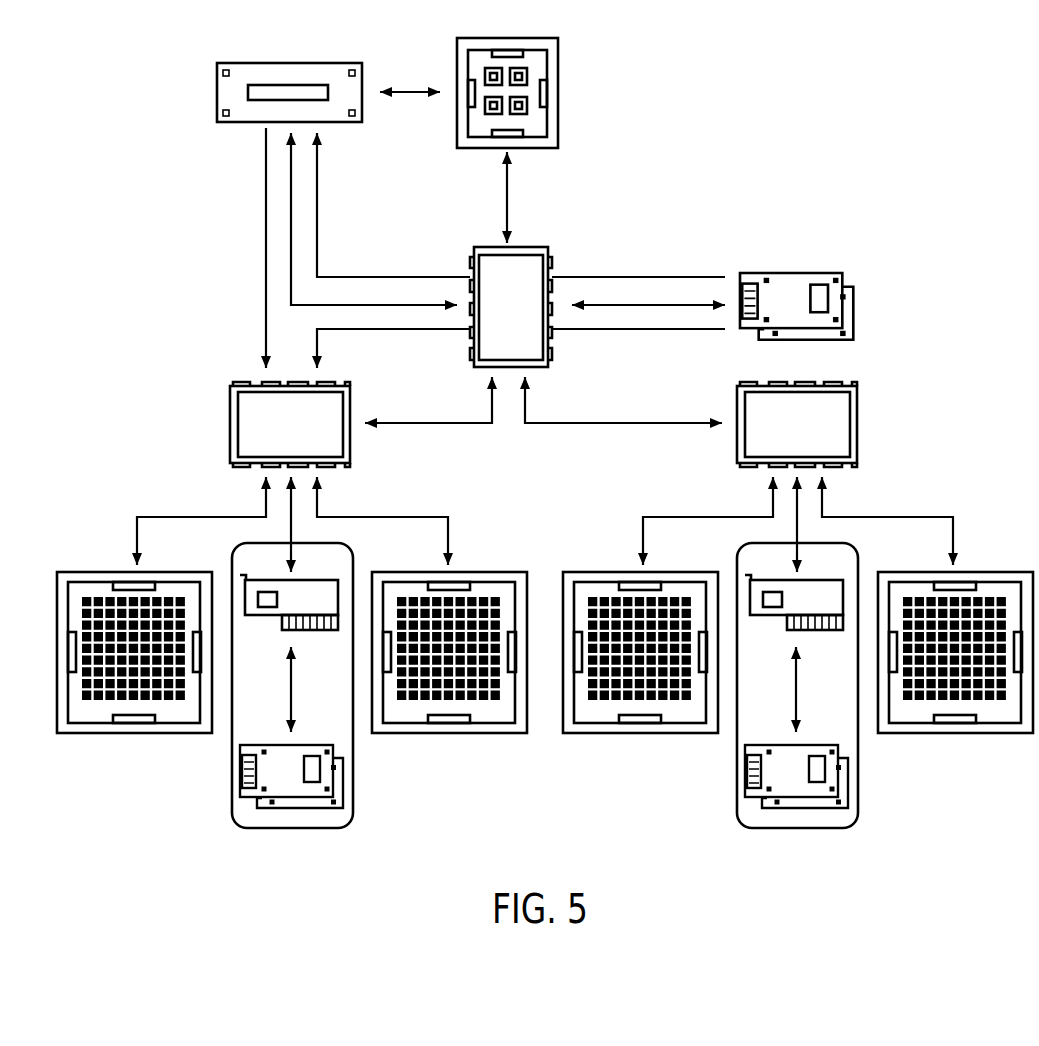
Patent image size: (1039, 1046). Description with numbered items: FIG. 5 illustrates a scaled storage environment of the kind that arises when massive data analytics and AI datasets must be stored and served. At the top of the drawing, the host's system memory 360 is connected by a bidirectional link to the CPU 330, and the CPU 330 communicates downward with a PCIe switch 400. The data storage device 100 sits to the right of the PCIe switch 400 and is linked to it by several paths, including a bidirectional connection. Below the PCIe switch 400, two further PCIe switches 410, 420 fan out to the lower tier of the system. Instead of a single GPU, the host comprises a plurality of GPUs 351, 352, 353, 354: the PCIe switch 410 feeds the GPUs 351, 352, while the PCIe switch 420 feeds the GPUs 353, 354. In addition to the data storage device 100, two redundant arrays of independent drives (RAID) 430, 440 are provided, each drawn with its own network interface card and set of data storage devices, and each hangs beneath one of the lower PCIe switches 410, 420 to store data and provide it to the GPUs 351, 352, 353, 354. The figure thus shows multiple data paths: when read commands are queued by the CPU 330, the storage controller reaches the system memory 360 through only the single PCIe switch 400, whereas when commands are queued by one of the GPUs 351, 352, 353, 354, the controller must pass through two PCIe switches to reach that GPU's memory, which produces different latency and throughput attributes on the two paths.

The data storage device 100 is at (793, 273).
The CPU 330 is at (512, 38).
The system memory 360 is at (290, 63).
The PCIe switch 400 is at (523, 247).
The PCIe switch 410 is at (348, 382).
The PCIe switch 420 is at (856, 382).
The GPU 351 is at (168, 572).
The GPU 352 is at (486, 572).
The GPU 353 is at (671, 572).
The GPU 354 is at (987, 572).
The redundant array of independent drives (RAID) 430 is at (354, 786).
The redundant array of independent drives (RAID) 440 is at (859, 786).